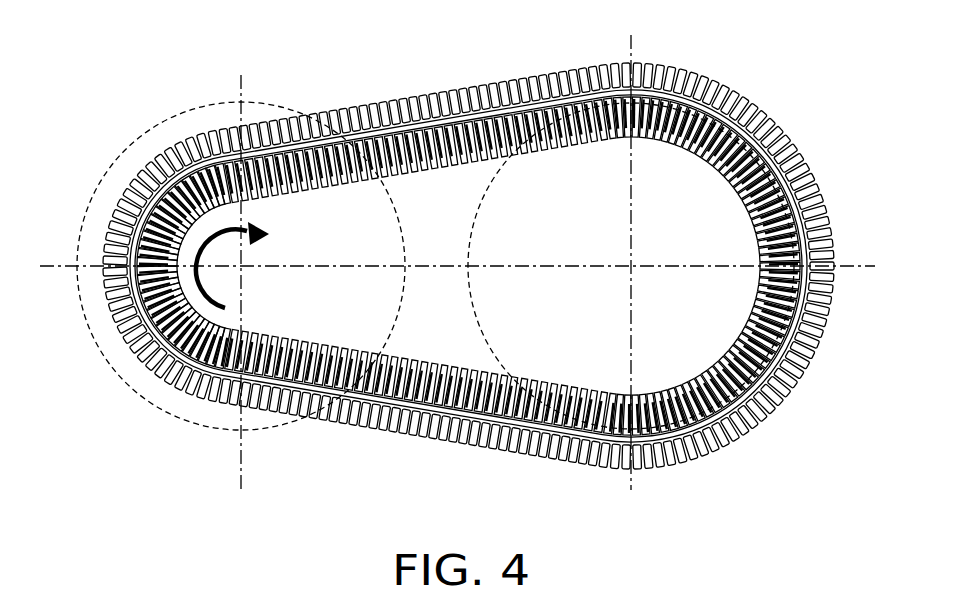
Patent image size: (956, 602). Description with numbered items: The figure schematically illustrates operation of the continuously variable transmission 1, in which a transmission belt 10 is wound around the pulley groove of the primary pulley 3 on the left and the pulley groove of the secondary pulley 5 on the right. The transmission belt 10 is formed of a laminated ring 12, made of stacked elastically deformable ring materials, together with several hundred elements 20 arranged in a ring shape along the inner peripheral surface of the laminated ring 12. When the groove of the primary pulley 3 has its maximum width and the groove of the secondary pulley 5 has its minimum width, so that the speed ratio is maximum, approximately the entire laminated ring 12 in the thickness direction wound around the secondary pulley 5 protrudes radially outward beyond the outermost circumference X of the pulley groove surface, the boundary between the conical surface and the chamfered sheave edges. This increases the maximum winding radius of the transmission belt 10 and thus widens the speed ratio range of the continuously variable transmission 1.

The continuously variable transmission 1 is at (790, 98).
The primary pulley 3 is at (105, 163).
The secondary pulley 5 is at (465, 249).
The transmission belt 10 is at (487, 265).
The laminated ring 12 is at (778, 390).
The element 20 is at (447, 433).
The outermost circumference of the pulley groove surface X is at (472, 324).